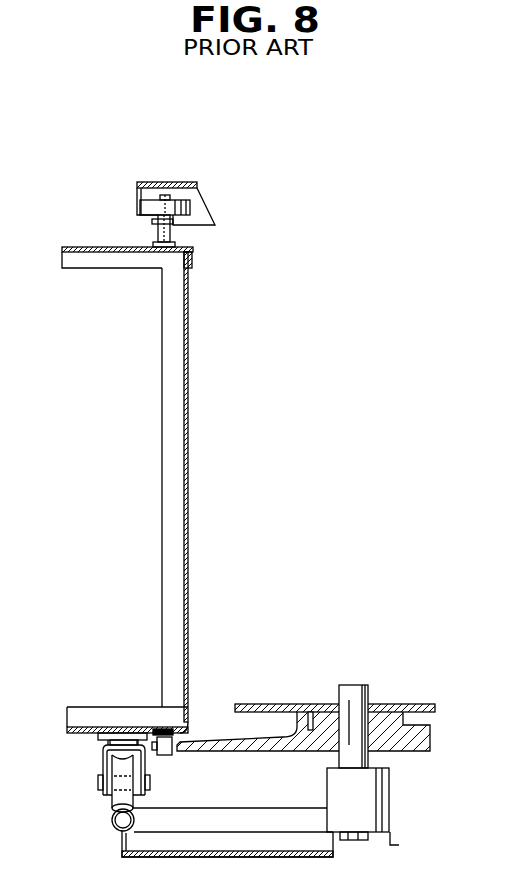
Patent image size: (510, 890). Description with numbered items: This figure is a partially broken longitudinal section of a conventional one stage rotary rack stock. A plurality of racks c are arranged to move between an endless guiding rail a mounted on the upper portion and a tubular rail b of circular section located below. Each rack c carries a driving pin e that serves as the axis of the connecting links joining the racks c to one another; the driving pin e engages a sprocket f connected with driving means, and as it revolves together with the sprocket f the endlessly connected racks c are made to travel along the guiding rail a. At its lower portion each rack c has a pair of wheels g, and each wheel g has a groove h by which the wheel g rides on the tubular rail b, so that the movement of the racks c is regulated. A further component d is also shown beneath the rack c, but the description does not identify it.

The endless guiding rail a is at (137, 197).
The tubular rail b is at (113, 826).
The rack c is at (188, 437).
The mounting plate d is at (168, 728).
The driving pin e is at (165, 756).
The sprocket f is at (268, 752).
The wheel g is at (100, 752).
The groove h is at (114, 757).